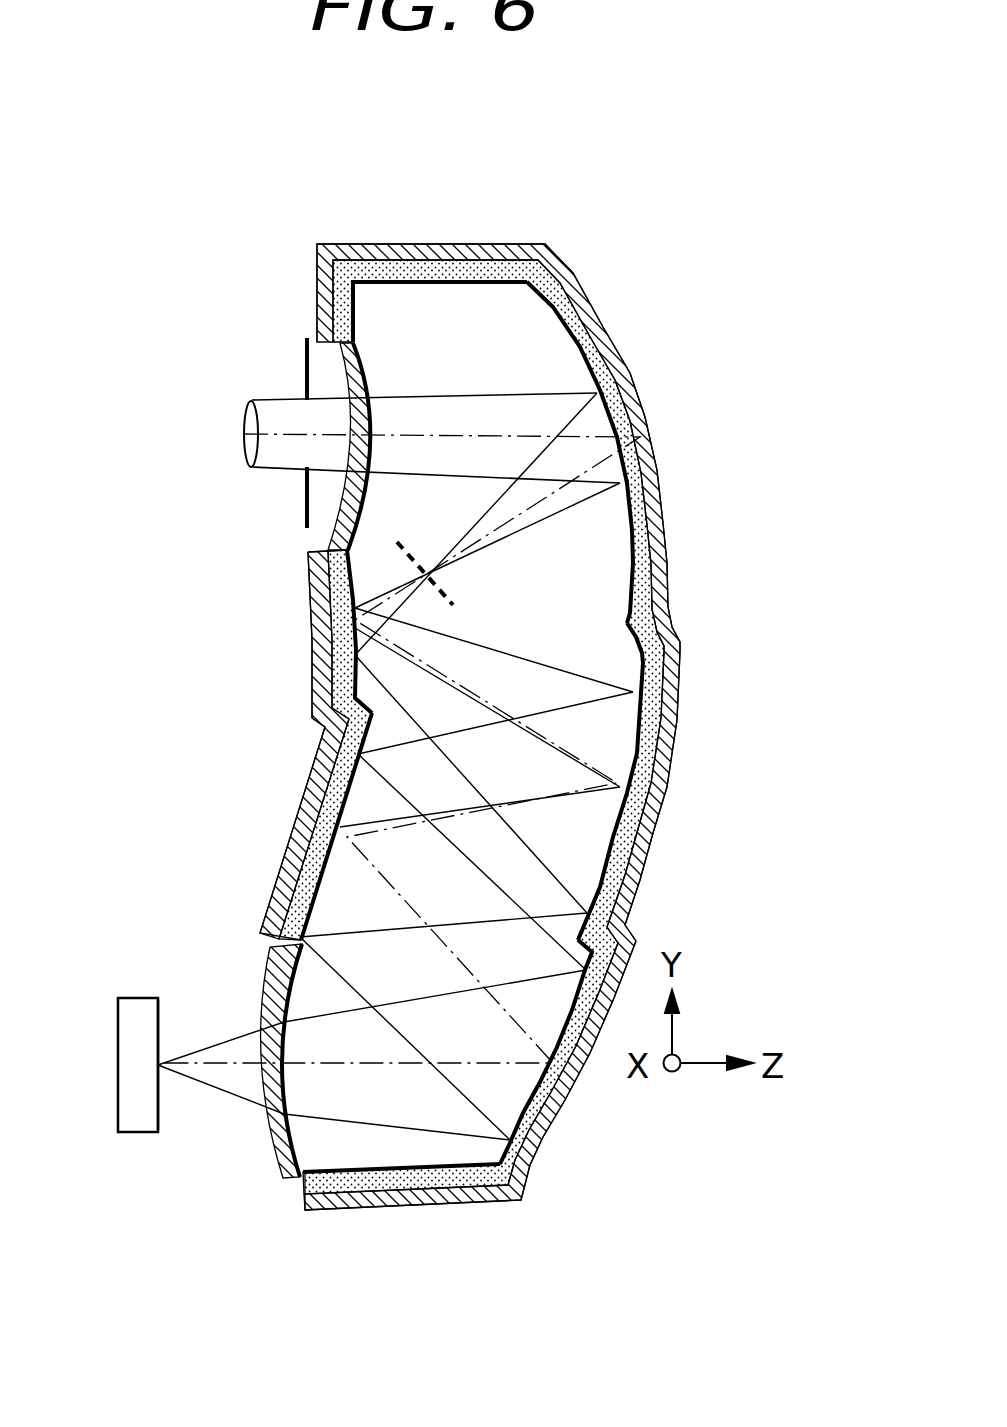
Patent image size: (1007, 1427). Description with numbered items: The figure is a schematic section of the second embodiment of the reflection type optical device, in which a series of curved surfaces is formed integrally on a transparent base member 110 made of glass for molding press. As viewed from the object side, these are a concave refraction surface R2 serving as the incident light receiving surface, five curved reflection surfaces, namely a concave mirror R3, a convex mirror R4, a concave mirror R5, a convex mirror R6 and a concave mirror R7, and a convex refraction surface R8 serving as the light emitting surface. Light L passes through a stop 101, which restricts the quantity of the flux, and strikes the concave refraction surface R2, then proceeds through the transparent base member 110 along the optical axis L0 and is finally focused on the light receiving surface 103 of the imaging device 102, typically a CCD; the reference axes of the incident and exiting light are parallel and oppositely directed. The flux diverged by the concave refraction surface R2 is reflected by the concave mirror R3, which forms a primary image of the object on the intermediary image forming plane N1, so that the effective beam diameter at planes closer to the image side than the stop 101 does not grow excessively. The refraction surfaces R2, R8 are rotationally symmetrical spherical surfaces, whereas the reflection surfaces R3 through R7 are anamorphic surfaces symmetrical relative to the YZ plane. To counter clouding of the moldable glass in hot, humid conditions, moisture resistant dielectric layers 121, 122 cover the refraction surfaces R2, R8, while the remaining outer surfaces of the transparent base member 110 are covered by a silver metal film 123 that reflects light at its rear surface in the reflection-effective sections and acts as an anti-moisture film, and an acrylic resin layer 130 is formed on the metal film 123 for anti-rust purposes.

The transparent base member 110 is at (465, 300).
The concave refraction surface R2 is at (366, 345).
The concave mirror R3 is at (580, 298).
The convex mirror R4 is at (352, 622).
The concave mirror R5 is at (628, 847).
The convex mirror R6 is at (318, 862).
The concave mirror R7 is at (557, 1128).
The convex refraction surface R8 is at (282, 1180).
The moisture resistant dielectric layer 121 is at (343, 352).
The moisture resistant dielectric layer 122 is at (275, 1122).
The metal film 123 is at (634, 438).
The acrylic resin layer 130 is at (668, 498).
The light L is at (252, 400).
The optical axis L0 is at (244, 434).
The stop 101 is at (305, 500).
The imaging device 102 is at (139, 1000).
The light receiving surface 103 is at (158, 1113).
The intermediary image forming plane N1 is at (413, 560).